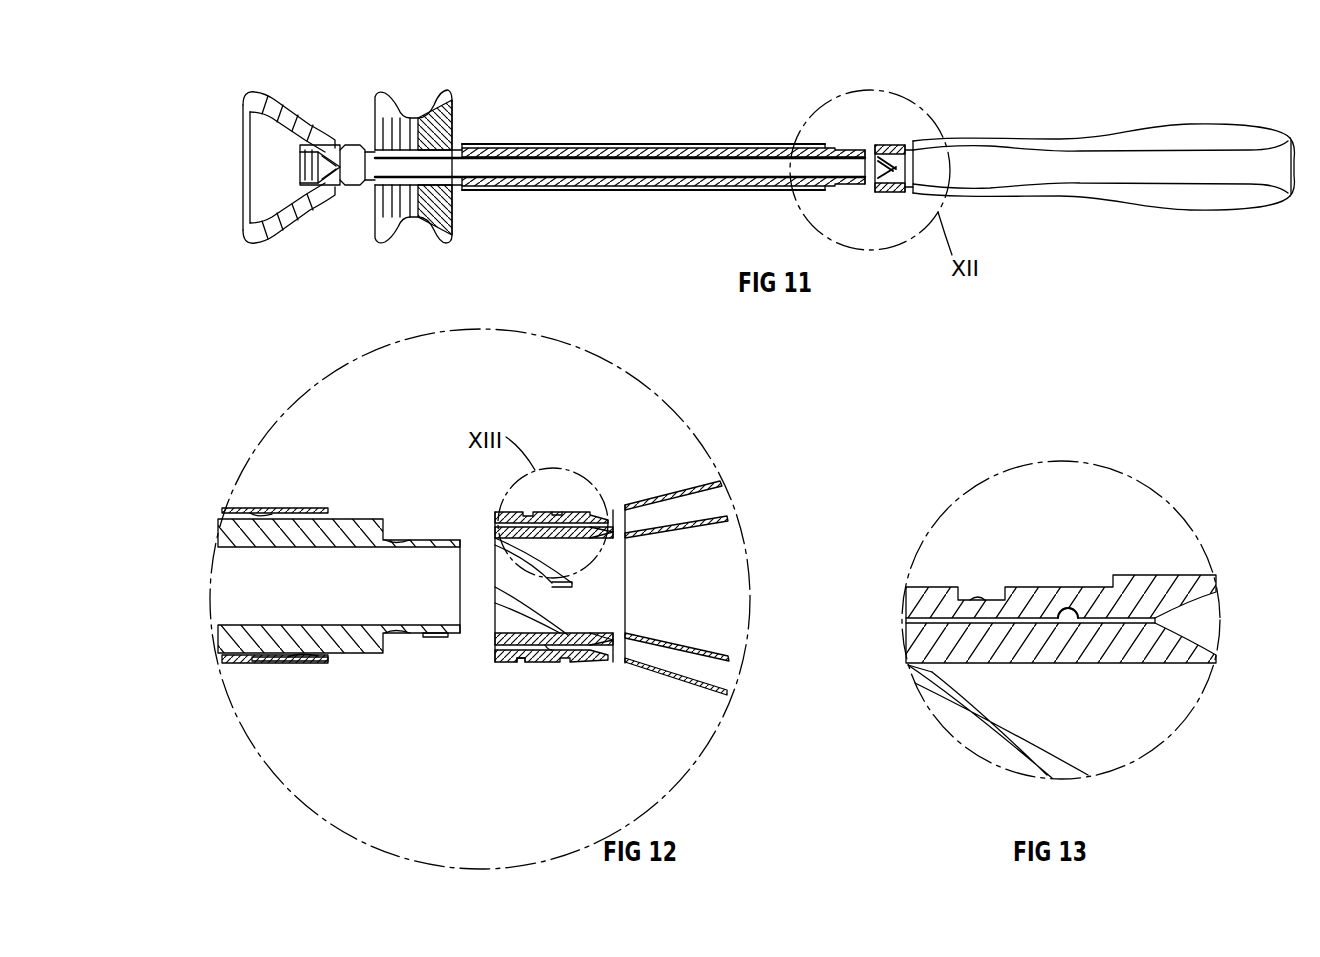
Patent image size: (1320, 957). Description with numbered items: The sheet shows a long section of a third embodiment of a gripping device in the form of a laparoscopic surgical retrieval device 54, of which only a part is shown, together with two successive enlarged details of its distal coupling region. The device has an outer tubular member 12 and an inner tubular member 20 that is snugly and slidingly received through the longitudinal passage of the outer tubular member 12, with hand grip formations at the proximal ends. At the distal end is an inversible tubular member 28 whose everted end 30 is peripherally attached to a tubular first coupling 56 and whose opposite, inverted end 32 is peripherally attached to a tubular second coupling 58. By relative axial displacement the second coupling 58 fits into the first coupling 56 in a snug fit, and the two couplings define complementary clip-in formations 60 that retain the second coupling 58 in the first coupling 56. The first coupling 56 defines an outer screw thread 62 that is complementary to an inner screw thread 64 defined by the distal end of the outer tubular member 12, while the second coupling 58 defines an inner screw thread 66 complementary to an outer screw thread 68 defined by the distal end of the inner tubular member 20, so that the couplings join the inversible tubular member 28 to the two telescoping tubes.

In FIG. 11, the outer tubular member 12 is at (566, 192).
In FIG. 12, the outer tubular member 12 is at (235, 663).
In FIG. 11, the inner tubular member 20 is at (425, 137).
In FIG. 12, the inner tubular member 20 is at (350, 519).
In FIG. 11, the inversible tubular member 28 is at (1152, 127).
In FIG. 12, the everted end 30 is at (627, 505).
In FIG. 12, the inverted end 32 is at (624, 665).
In FIG. 11, the retrieval device 54 is at (637, 92).
In FIG. 11, the first coupling 56 is at (890, 147).
In FIG. 12, the first coupling 56 is at (563, 513).
In FIG. 13, the first coupling 56 is at (1143, 598).
In FIG. 12, the second coupling 58 is at (587, 640).
In FIG. 13, the second coupling 58 is at (1135, 655).
In FIG. 13, the clip-in formations 60 is at (1068, 610).
In FIG. 12, the outer screw thread 62 is at (533, 663).
In FIG. 12, the inner screw thread 64 is at (300, 663).
In FIG. 12, the inner screw thread 66 is at (495, 660).
In FIG. 12, the outer screw thread 68 is at (427, 639).